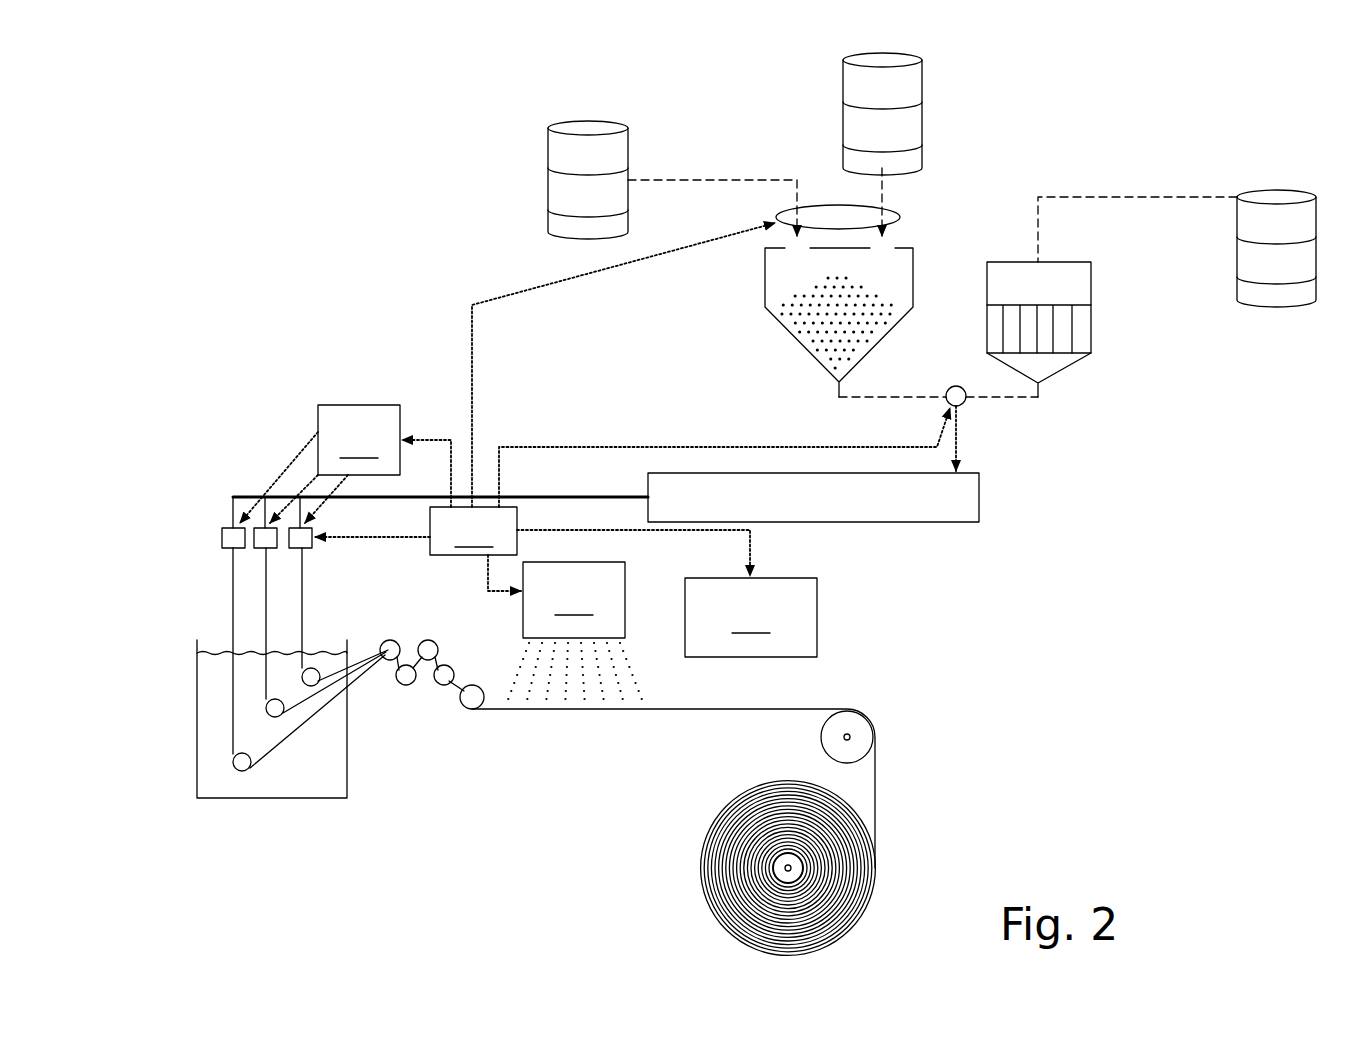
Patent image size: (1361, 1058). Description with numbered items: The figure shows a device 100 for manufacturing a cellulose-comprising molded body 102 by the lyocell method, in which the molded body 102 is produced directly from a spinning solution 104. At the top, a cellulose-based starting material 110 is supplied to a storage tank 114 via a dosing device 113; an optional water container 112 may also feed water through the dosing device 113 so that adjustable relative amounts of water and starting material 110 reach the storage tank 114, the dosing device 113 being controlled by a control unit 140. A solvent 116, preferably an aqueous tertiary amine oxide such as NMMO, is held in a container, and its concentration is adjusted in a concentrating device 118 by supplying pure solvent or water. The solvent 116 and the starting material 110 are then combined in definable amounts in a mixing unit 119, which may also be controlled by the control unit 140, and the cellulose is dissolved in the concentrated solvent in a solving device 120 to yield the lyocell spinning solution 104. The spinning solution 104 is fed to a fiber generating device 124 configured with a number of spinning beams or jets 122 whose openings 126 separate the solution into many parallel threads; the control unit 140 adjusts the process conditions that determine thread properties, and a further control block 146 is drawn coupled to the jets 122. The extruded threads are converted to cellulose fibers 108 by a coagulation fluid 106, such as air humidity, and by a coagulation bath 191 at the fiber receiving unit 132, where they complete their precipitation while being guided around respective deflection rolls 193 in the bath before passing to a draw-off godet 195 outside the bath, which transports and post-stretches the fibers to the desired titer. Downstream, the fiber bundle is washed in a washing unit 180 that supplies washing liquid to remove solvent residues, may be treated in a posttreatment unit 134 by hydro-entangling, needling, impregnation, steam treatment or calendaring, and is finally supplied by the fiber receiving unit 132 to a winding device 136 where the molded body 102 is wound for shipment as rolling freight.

The device 100 is at (308, 180).
The molded body 102 is at (718, 845).
The spinning solution 104 is at (528, 497).
The coagulation fluid 106 is at (212, 733).
The cellulose fibers 108 is at (806, 708).
The starting material 110 is at (590, 126).
The water container 112 is at (913, 80).
The dosing device 113 is at (832, 205).
The storage tank 114 is at (913, 248).
The solvent 116 is at (1277, 197).
The concentrating device 118 is at (1091, 280).
The mixing unit 119 is at (968, 402).
The solving device 120 is at (979, 500).
The jets 122 is at (303, 525).
The fiber generating device 124 is at (172, 537).
The openings 126 is at (228, 549).
The fiber receiving unit 132 is at (366, 786).
The posttreatment unit 134 is at (751, 617).
The winding device 136 is at (778, 873).
The control unit 140 is at (632, 407).
The pump controller 146 is at (345, 464).
The washing unit 180 is at (575, 630).
The coagulation bath 191 is at (193, 685).
The deflection roll 193 is at (243, 771).
The draw-off godet 195 is at (440, 638).